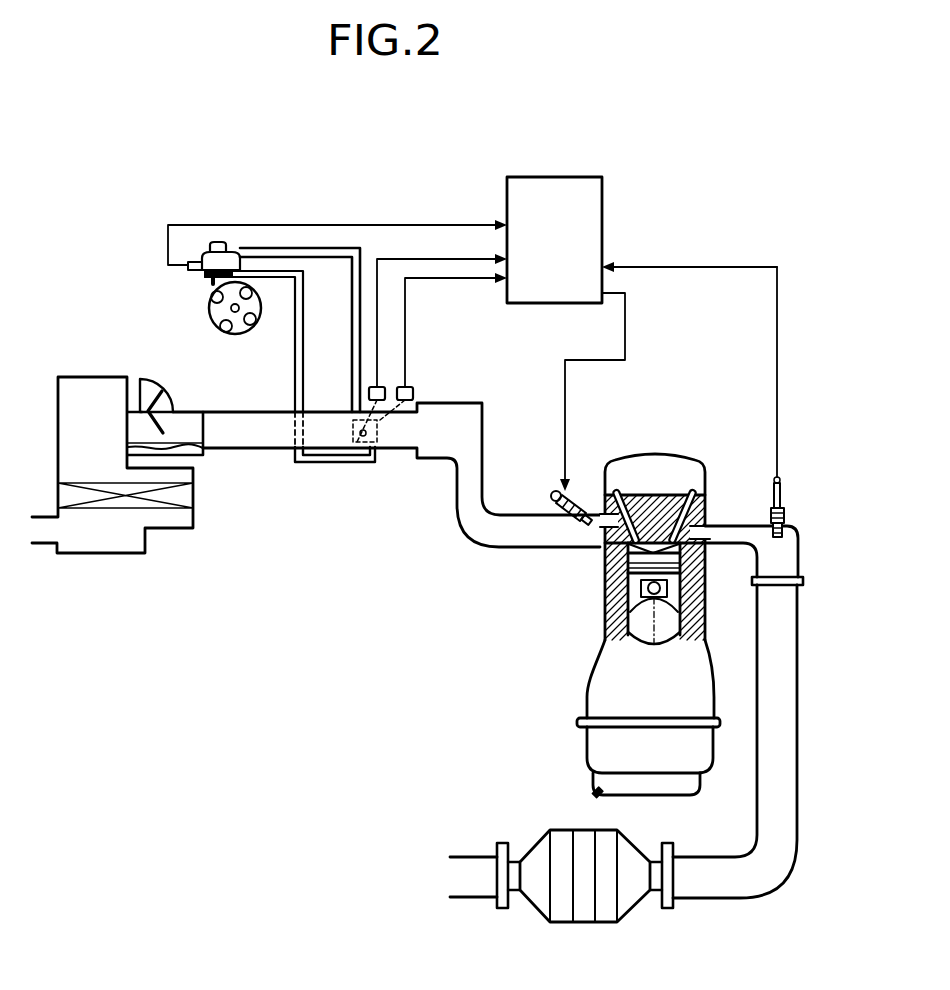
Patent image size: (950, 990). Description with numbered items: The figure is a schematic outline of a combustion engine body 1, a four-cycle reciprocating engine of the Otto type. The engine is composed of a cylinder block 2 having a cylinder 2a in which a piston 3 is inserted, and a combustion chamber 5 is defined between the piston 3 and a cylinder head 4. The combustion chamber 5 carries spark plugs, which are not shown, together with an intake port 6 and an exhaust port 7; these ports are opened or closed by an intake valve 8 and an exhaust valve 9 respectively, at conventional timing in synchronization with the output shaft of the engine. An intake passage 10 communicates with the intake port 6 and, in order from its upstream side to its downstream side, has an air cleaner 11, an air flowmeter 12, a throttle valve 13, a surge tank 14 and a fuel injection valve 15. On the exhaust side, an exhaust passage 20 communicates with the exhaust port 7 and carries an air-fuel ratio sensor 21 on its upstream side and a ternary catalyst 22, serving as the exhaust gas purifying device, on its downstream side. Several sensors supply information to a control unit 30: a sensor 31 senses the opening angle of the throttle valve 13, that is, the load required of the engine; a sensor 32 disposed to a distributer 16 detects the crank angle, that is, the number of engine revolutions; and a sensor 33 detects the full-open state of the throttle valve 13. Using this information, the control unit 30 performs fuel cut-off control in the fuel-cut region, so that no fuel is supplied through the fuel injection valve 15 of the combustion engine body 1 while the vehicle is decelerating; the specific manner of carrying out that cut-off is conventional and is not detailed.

The combustion engine 1 is at (568, 681).
The cylinder block 2 is at (702, 603).
The cylinder 2a is at (670, 643).
The piston 3 is at (630, 587).
The cylinder head 4 is at (708, 503).
The combustion chamber 5 is at (708, 568).
The intake port 6 is at (597, 541).
The exhaust port 7 is at (715, 524).
The intake valve 8 is at (630, 492).
The exhaust valve 9 is at (667, 492).
The intake passage 10 is at (482, 422).
The air cleaner 11 is at (197, 514).
The air flowmeter 12 is at (172, 404).
The throttle valve 13 is at (383, 450).
The surge tank 14 is at (470, 402).
The fuel injection valve 15 is at (552, 496).
The distributer 16 is at (210, 281).
The exhaust passage 20 is at (793, 660).
The air-fuel ratio sensor 21 is at (786, 505).
The ternary catalyst 22 is at (603, 923).
The control unit 30 is at (567, 256).
The throttle opening angle sensor 31 is at (368, 393).
The crank angle sensor 32 is at (193, 268).
The throttle full-open sensor 33 is at (410, 391).